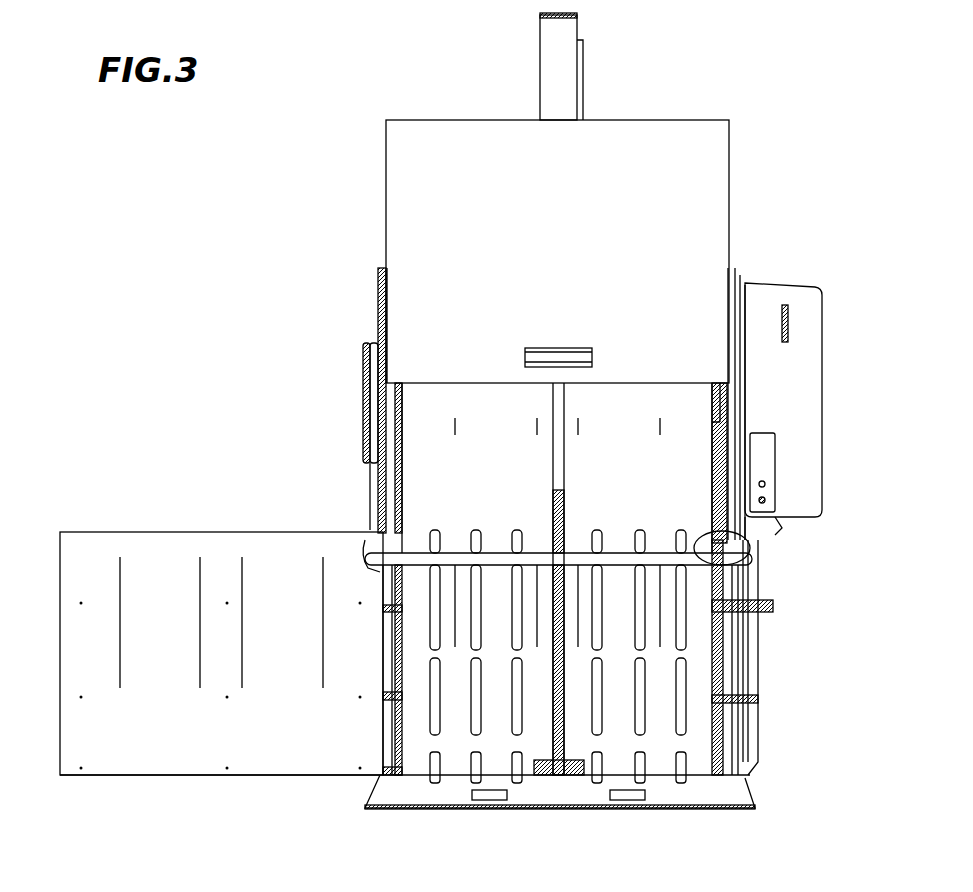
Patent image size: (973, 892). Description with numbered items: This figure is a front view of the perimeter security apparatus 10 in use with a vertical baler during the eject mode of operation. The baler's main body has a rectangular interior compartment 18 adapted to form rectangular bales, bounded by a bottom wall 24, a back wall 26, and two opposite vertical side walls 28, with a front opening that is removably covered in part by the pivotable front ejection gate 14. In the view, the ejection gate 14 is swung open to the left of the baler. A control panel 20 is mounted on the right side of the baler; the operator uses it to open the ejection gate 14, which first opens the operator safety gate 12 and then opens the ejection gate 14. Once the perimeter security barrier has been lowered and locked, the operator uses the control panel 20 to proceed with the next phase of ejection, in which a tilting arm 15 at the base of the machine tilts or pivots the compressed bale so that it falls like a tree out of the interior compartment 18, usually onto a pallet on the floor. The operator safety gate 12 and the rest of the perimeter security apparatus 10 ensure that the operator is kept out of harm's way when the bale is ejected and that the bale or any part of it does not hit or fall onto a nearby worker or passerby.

The perimeter security apparatus 10 is at (745, 535).
The operator safety gate 12 is at (738, 680).
The ejection gate 14 is at (160, 553).
The tilting arm 15 is at (565, 775).
The interior compartment 18 is at (470, 460).
The control panel 20 is at (790, 405).
The bottom wall 24 is at (453, 772).
The back wall 26 is at (623, 656).
The vertical side walls 28 is at (713, 620).